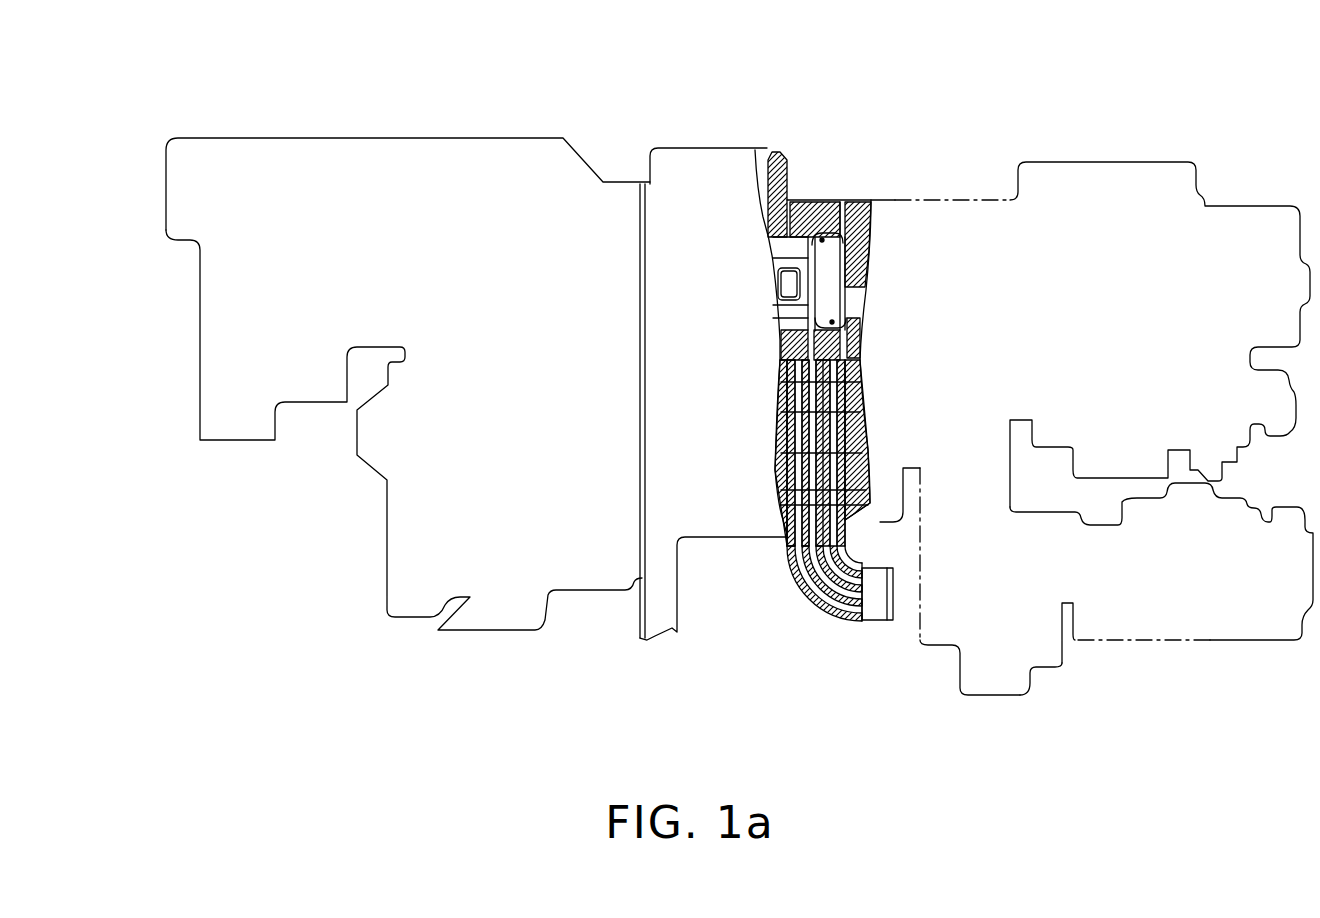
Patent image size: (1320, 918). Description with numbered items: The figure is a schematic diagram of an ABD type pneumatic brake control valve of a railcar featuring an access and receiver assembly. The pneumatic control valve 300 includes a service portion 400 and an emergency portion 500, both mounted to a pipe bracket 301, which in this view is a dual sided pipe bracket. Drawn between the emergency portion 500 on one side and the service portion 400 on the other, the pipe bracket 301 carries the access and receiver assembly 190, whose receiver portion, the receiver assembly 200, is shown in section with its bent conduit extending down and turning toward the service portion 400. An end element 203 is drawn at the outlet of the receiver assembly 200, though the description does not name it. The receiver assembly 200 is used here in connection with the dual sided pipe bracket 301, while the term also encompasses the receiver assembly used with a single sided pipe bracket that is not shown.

The emergency portion 500 is at (358, 138).
The pipe bracket 301 is at (697, 148).
The pneumatic control valve 300 is at (905, 156).
The access and receiver assembly 190 is at (818, 200).
The receiver assembly 200 is at (872, 622).
The conduit end cap 203 is at (893, 607).
The service portion 400 is at (1112, 162).